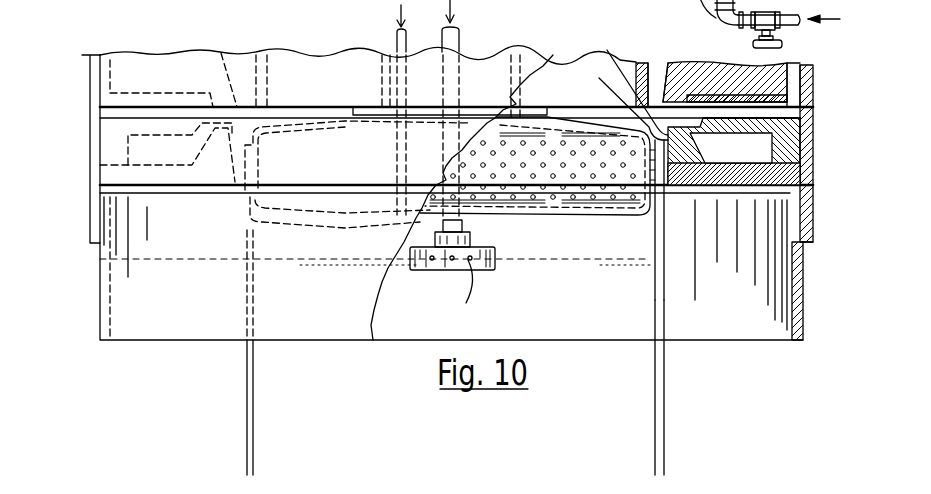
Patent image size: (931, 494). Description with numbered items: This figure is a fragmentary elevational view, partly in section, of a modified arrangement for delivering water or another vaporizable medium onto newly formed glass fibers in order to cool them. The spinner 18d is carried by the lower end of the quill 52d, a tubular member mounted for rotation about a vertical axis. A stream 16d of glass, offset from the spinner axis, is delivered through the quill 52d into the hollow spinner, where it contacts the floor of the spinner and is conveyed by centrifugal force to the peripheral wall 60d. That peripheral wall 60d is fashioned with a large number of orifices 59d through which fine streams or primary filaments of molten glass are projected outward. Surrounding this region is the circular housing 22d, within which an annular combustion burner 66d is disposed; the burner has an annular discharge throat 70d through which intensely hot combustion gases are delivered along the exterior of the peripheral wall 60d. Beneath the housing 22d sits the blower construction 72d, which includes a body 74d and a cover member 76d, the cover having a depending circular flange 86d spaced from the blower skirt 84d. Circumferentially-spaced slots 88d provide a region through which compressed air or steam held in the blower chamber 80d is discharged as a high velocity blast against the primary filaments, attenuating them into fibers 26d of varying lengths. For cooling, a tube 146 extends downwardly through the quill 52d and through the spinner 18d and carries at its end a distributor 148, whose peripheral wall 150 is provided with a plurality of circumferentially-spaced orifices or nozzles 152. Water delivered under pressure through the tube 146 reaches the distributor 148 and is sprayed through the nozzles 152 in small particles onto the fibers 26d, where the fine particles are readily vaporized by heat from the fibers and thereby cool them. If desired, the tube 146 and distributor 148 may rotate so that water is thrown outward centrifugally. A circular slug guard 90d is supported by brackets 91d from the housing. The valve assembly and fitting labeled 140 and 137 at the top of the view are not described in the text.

The brackets 91d is at (90, 82).
The circular slug guard 90d is at (806, 285).
The annular combustion burner 66d is at (730, 70).
The annular discharge throat 70d is at (658, 80).
The circular housing 22d is at (790, 68).
The blower construction 72d is at (795, 133).
The body 74d is at (745, 175).
The blower chamber 80d is at (750, 160).
The cover member 76d is at (760, 118).
The depending circular flange 86d is at (612, 58).
The circumferentially-spaced slots 88d is at (610, 80).
The spinner 18d is at (595, 124).
The peripheral wall 60d is at (650, 195).
The orifices 59d is at (485, 165).
The blower skirt 84d is at (660, 170).
The fibers 26d is at (247, 366).
The quill 52d is at (380, 70).
The stream of glass 16d is at (398, 48).
The tube 146 is at (462, 36).
The orifices or nozzles 152 is at (432, 262).
The distributor 148 is at (452, 262).
The peripheral wall 150 is at (498, 265).
The valve 140 is at (800, 12).
The elbow 137 is at (700, 3).